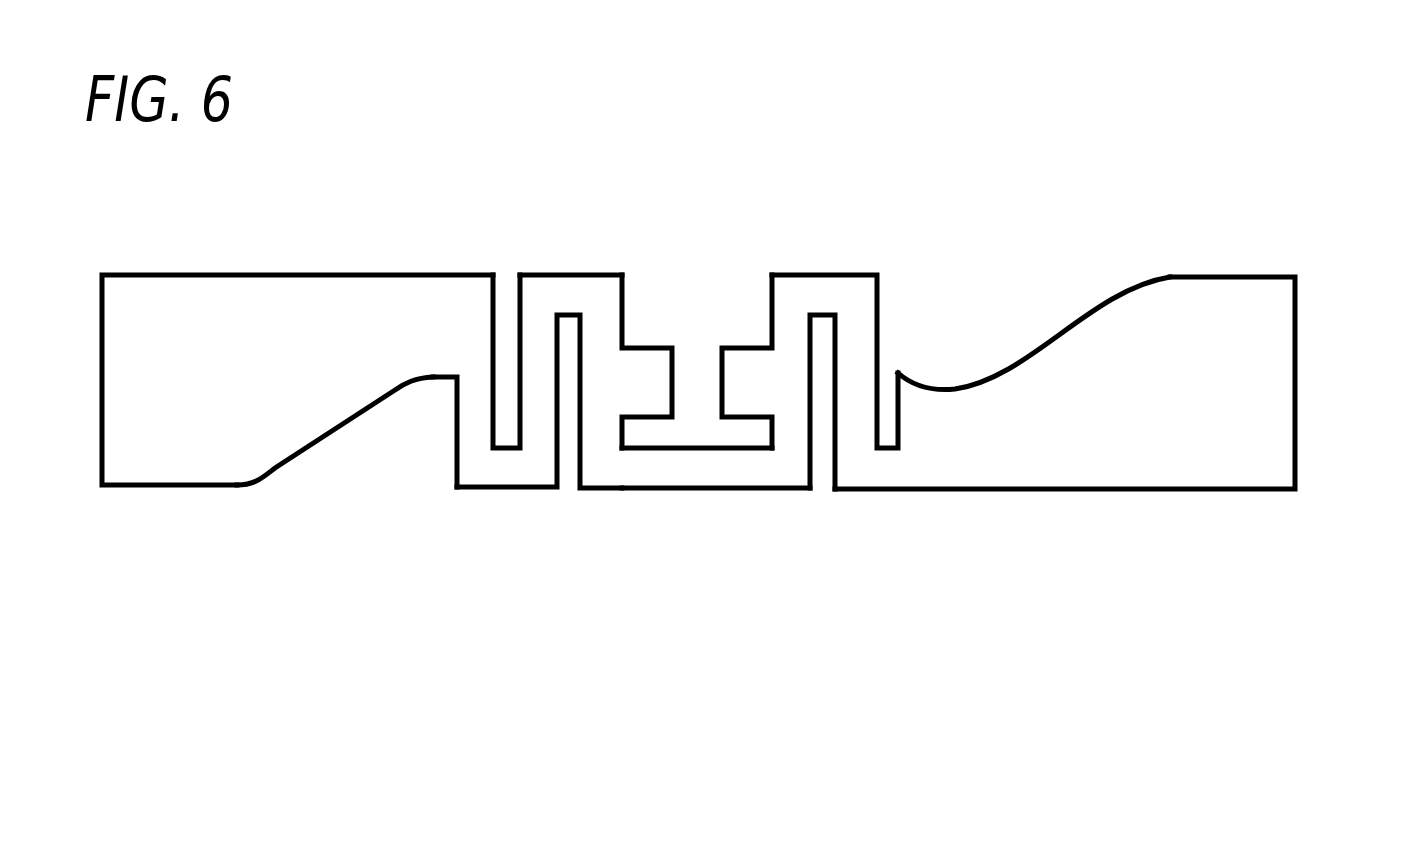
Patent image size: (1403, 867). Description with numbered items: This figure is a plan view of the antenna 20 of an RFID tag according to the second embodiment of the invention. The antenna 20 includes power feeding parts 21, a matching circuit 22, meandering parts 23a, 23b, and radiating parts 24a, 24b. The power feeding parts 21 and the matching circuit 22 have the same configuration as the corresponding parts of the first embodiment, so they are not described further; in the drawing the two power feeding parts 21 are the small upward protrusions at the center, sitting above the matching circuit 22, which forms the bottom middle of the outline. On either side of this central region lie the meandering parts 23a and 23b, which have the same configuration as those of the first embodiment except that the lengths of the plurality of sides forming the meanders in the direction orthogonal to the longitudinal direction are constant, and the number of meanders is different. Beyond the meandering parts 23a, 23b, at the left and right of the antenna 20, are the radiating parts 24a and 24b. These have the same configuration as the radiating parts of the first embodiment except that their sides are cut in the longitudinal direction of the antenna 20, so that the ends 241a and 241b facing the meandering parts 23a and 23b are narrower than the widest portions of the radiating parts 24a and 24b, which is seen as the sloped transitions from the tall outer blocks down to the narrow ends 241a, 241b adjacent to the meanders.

The antenna 20 is at (1295, 383).
The power feeding parts 21 is at (654, 380).
The matching circuit 22 is at (770, 460).
The meandering part 23a is at (618, 493).
The meandering part 23b is at (898, 270).
The radiating part 24a is at (233, 470).
The radiating part 24b is at (1208, 481).
The end 241a is at (435, 362).
The end 241b is at (911, 423).